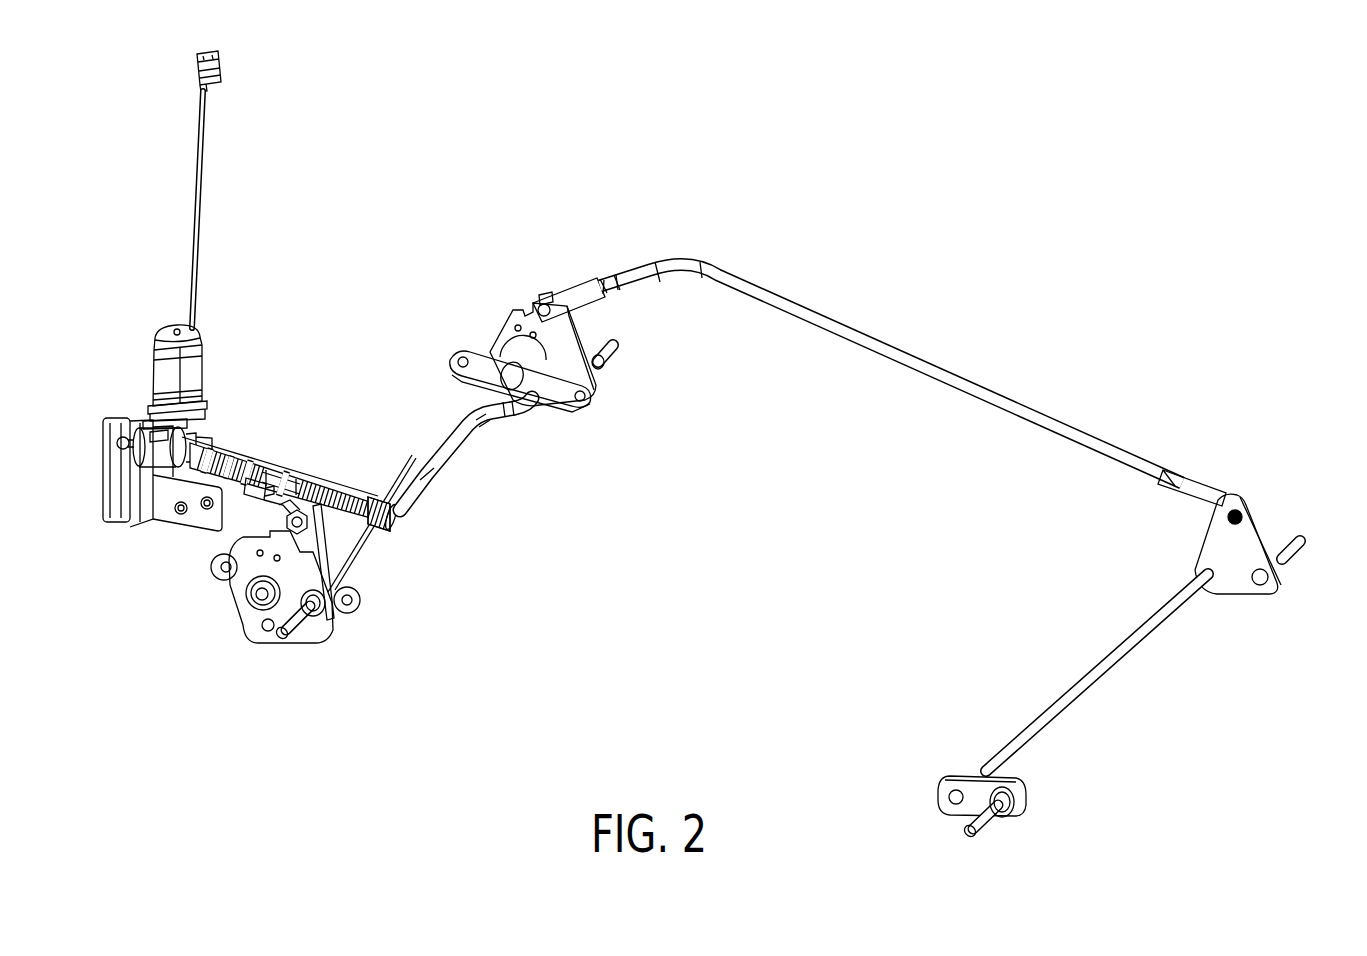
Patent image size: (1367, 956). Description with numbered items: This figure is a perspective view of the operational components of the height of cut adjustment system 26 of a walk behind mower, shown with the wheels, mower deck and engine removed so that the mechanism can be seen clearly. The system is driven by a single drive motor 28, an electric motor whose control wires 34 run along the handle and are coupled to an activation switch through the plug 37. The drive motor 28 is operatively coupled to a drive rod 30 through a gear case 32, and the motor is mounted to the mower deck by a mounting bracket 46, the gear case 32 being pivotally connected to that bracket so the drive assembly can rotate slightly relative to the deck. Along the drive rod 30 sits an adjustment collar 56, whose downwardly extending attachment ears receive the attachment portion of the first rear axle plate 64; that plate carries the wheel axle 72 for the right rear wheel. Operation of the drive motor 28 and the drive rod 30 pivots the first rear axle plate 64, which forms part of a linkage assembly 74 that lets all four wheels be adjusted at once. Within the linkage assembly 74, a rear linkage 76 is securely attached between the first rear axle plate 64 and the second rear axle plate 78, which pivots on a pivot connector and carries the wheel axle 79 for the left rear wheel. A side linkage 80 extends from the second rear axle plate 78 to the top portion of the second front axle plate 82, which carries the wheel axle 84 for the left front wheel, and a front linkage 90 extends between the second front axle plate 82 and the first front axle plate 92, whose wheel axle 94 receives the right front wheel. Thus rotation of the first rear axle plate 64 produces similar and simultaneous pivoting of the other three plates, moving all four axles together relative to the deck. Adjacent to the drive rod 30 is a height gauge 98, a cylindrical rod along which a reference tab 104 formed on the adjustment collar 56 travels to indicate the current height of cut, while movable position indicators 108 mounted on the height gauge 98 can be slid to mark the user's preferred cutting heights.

The height of cut adjustment system 26 is at (307, 283).
The drive motor 28 is at (160, 380).
The drive rod 30 is at (353, 527).
The gear case 32 is at (163, 440).
The control wires 34 is at (203, 207).
The plug 37 is at (222, 68).
The mounting bracket 46 is at (140, 500).
The adjustment collar 56 is at (297, 493).
The first rear axle plate 64 is at (320, 628).
The wheel axle 72 is at (292, 622).
The linkage assembly 74 is at (732, 268).
The rear linkage 76 is at (423, 488).
The second rear axle plate 78 is at (567, 337).
The wheel axle 79 is at (602, 362).
The side linkage 80 is at (950, 370).
The second front axle plate 82 is at (1210, 550).
The wheel axle 84 is at (1292, 555).
The front linkage 90 is at (1103, 668).
The first front axle plate 92 is at (975, 783).
The wheel axle 94 is at (988, 813).
The height gauge 98 is at (230, 442).
The reference tab 104 is at (255, 488).
The position indicators 108 is at (243, 450).